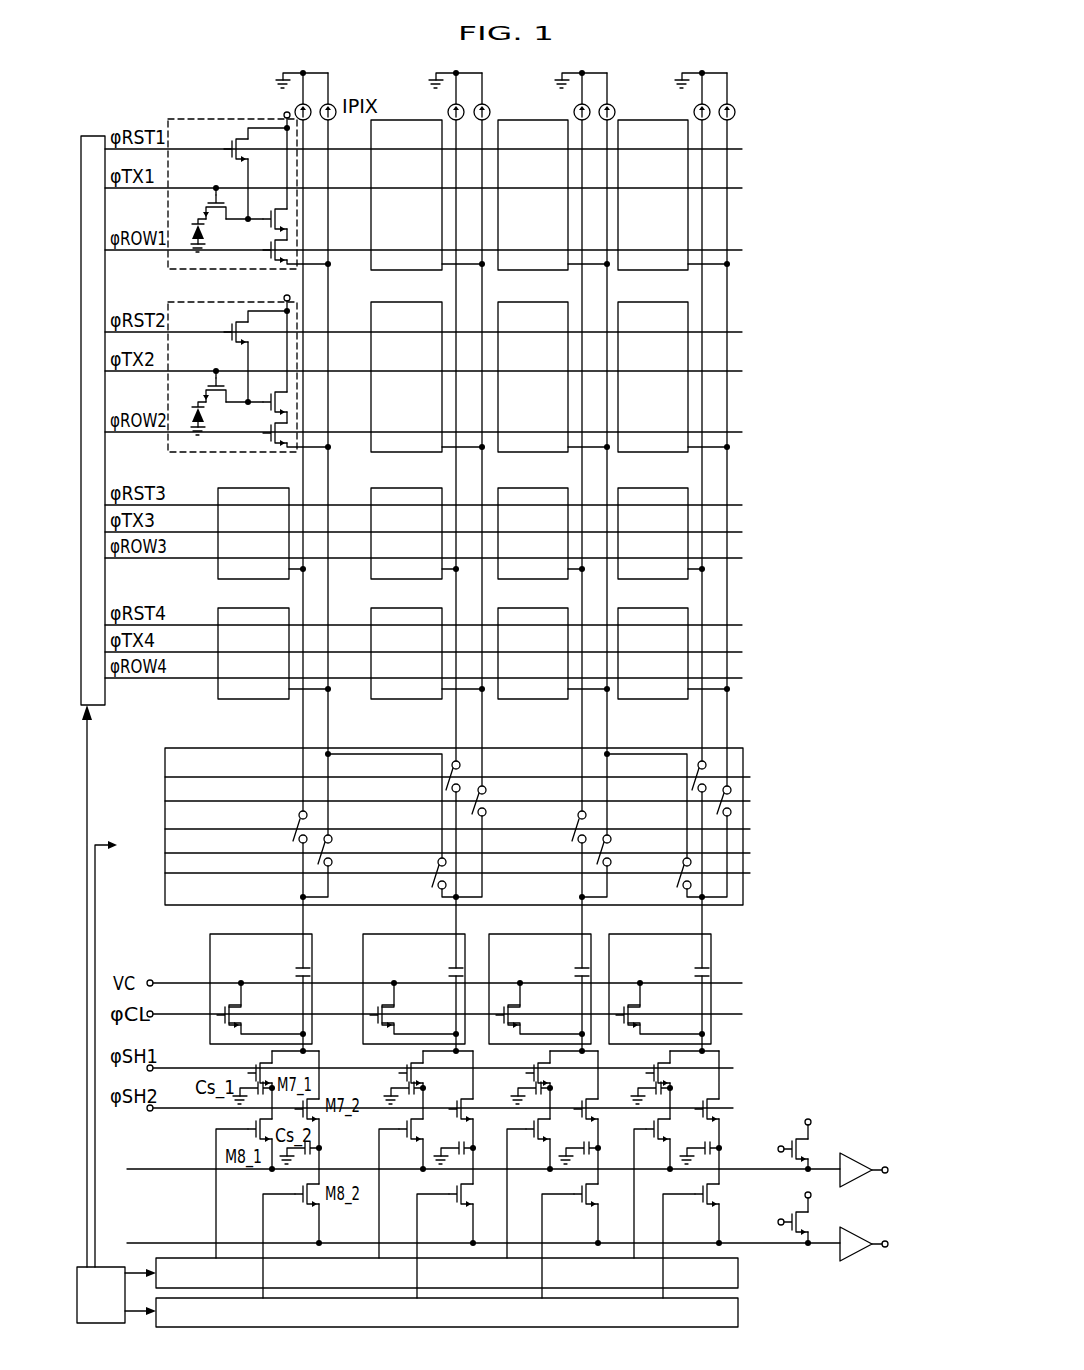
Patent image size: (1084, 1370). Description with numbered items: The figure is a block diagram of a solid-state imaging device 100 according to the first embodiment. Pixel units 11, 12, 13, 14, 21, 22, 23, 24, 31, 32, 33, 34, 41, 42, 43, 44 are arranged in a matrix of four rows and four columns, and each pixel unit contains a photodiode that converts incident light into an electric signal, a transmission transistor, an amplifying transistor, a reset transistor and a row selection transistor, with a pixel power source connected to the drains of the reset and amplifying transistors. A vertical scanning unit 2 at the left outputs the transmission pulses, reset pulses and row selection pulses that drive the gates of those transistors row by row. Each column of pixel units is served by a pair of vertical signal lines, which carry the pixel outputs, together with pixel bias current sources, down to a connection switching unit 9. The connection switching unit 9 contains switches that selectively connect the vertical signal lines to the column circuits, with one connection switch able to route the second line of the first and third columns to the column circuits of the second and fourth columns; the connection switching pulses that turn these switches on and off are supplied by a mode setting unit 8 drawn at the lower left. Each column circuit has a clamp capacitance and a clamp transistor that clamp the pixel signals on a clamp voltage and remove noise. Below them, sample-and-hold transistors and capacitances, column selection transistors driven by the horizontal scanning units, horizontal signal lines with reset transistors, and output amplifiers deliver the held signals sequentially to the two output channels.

The solid-state imaging device 100 is at (795, 166).
The vertical scanning unit 2 is at (93, 136).
The pixel unit 11 is at (223, 114).
The pixel unit 12 is at (400, 120).
The pixel unit 13 is at (528, 120).
The pixel unit 14 is at (649, 120).
The pixel unit 21 is at (214, 302).
The pixel unit 22 is at (410, 302).
The pixel unit 23 is at (536, 302).
The pixel unit 24 is at (656, 302).
The pixel unit 31 is at (218, 573).
The pixel unit 32 is at (410, 488).
The pixel unit 33 is at (536, 488).
The pixel unit 34 is at (656, 488).
The pixel unit 41 is at (218, 693).
The pixel unit 42 is at (410, 608).
The pixel unit 43 is at (536, 608).
The pixel unit 44 is at (656, 608).
The connection switching unit 9 is at (745, 765).
The mode setting unit 8 is at (112, 1267).